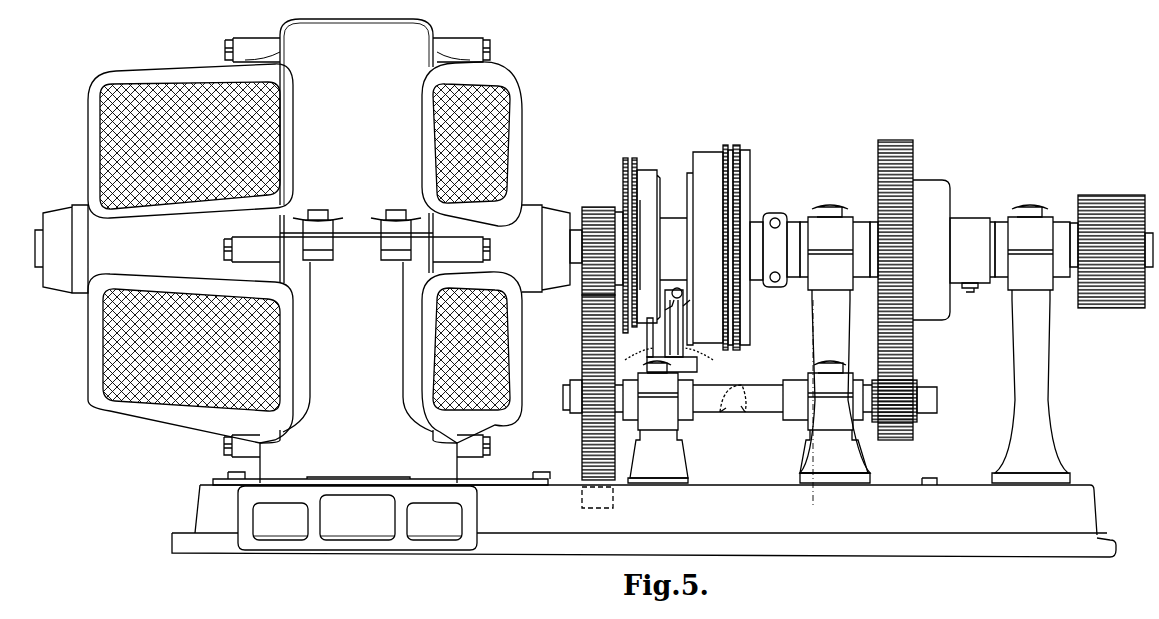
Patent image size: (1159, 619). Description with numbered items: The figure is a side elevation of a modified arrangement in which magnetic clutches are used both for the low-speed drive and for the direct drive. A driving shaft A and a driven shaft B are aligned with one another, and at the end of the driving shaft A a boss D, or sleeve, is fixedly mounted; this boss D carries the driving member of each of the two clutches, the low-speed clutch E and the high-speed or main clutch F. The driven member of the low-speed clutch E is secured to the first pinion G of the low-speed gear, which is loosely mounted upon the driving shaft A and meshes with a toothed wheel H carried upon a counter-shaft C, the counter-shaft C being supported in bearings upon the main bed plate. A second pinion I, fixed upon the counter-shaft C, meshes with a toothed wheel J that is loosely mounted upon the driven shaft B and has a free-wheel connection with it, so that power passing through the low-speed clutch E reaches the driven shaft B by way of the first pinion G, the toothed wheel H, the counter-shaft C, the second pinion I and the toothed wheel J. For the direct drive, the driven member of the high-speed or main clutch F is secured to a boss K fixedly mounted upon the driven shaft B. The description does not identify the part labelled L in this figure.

The driving shaft A is at (580, 233).
The driven shaft B is at (787, 237).
The counter-shaft C is at (763, 400).
The boss D is at (675, 223).
The low-speed clutch E is at (647, 183).
The high-speed or main clutch F is at (712, 165).
The first pinion G is at (597, 210).
The toothed wheel H is at (580, 355).
The second pinion I is at (910, 427).
The toothed wheel J is at (903, 140).
The boss K is at (755, 237).
The drum L is at (933, 210).